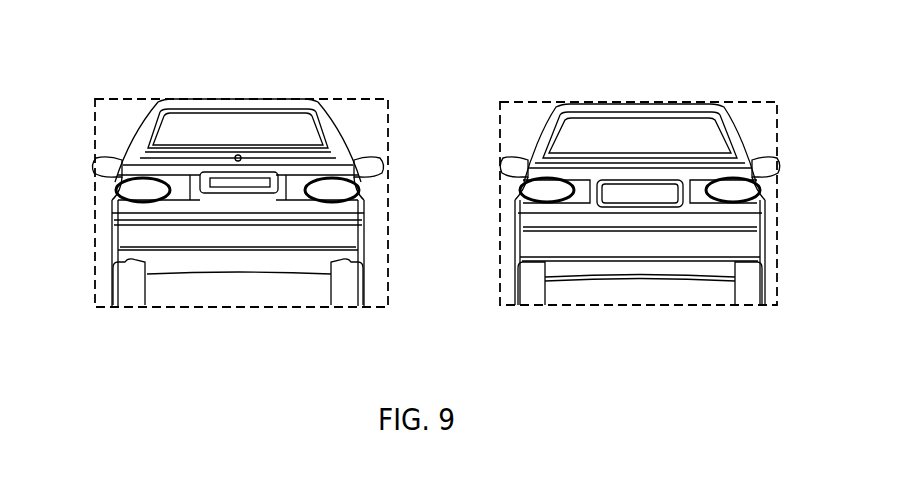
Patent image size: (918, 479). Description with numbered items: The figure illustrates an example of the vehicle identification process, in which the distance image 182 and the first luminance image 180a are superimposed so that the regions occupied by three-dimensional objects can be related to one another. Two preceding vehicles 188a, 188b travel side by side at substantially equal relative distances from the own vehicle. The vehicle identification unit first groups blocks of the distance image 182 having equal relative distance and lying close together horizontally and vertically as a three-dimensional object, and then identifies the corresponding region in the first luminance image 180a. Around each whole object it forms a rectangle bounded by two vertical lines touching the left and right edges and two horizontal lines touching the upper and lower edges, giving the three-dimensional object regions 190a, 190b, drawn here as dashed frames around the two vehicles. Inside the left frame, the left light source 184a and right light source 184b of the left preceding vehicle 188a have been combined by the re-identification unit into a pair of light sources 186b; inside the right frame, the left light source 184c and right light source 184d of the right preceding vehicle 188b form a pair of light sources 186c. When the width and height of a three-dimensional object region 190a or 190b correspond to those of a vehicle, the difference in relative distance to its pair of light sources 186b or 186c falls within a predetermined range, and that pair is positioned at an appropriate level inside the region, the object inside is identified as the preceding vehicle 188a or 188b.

The first luminance image 180a is at (457, 39).
The distance image 182 is at (449, 65).
The three-dimensional object region 190a is at (122, 100).
The three-dimensional object region 190b is at (524, 103).
The preceding vehicle 188a is at (271, 142).
The preceding vehicle 188b is at (671, 142).
The pair of light sources 186b is at (157, 187).
The pair of light sources 186c is at (557, 187).
The left light source 184a is at (142, 183).
The right light source 184b is at (322, 193).
The left light source 184c is at (547, 193).
The right light source 184d is at (730, 193).